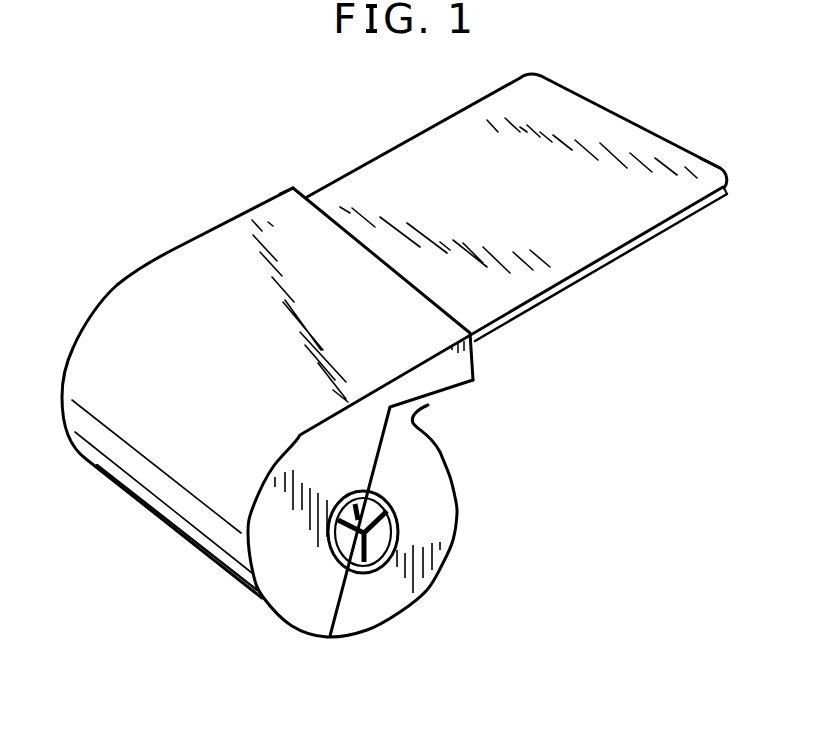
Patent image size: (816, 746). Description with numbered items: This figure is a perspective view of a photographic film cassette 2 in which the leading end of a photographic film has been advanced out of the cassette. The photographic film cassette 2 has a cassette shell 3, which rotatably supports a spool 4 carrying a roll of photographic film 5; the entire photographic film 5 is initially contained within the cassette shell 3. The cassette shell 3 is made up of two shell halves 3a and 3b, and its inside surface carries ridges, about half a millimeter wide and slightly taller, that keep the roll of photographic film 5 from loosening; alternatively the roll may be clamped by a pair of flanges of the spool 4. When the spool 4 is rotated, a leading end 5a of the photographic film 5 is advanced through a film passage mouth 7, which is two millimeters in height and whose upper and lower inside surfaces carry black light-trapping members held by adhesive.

The photographic film cassette 2 is at (158, 253).
The cassette shell 3 is at (306, 562).
The shell half 3a is at (290, 595).
The shell half 3b is at (357, 623).
The spool 4 is at (385, 522).
The photographic film 5 is at (376, 158).
The leading end 5a is at (632, 145).
The film passage mouth 7 is at (336, 225).